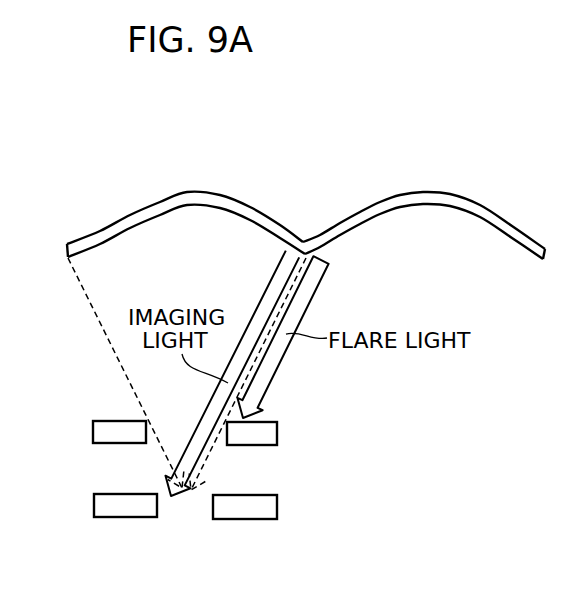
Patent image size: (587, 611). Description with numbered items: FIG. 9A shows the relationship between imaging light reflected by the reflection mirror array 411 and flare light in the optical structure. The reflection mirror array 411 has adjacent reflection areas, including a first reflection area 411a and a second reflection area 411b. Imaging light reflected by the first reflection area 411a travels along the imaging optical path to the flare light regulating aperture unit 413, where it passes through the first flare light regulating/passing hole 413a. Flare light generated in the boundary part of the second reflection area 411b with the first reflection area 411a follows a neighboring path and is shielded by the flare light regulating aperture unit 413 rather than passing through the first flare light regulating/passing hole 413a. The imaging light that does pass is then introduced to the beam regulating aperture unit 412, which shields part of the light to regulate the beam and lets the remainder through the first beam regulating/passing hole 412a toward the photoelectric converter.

The reflection mirror array 411 is at (306, 201).
The first reflection area 411a is at (188, 206).
The second reflection area 411b is at (425, 207).
The beam regulating aperture unit 412 is at (267, 503).
The first beam regulating/passing hole 412a is at (160, 507).
The flare light regulating aperture unit 413 is at (267, 433).
The first flare light regulating/passing hole 413a is at (150, 441).